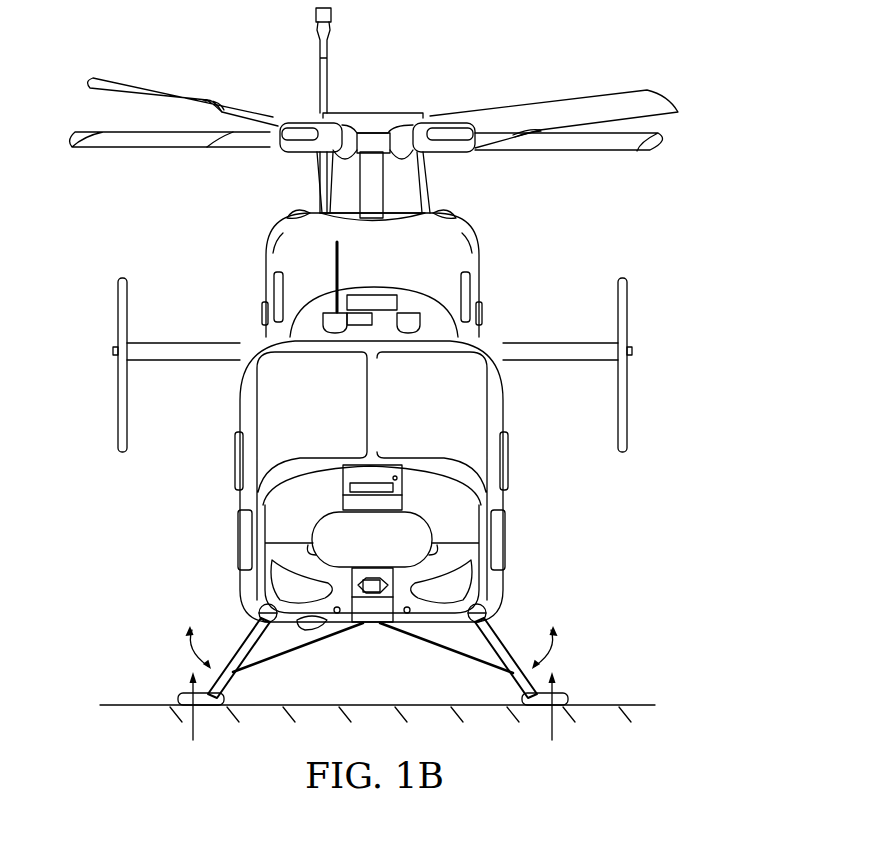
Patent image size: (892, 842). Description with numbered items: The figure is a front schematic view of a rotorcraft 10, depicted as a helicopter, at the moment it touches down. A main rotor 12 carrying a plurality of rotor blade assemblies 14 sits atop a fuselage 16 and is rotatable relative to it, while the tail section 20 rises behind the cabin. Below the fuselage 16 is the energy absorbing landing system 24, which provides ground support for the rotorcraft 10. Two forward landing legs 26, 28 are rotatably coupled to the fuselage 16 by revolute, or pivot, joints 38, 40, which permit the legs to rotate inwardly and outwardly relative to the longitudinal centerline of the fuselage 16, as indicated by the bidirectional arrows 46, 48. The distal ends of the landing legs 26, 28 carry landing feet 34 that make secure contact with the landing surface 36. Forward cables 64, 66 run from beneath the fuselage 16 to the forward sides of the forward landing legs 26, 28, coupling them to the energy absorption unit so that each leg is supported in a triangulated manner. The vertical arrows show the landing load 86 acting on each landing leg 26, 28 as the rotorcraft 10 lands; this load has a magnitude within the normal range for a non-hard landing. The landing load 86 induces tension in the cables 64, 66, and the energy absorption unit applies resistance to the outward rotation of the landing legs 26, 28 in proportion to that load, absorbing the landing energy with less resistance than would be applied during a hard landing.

The rotorcraft 10 is at (421, 386).
The main rotor 12 is at (377, 112).
The rotor blade assemblies 14 is at (647, 92).
The fuselage 16 is at (240, 547).
The tail section 20 is at (316, 64).
The energy absorbing landing system 24 is at (373, 666).
The forward landing leg 26 is at (514, 642).
The forward landing leg 28 is at (232, 643).
The landing feet 34 is at (208, 705).
The landing surface 36 is at (124, 705).
The revolute joint 38 is at (488, 610).
The revolute joint 40 is at (262, 610).
The bidirectional arrow 46 is at (552, 648).
The bidirectional arrow 48 is at (190, 650).
The forward cable 64 is at (434, 646).
The forward cable 66 is at (313, 646).
The landing load 86 is at (192, 734).